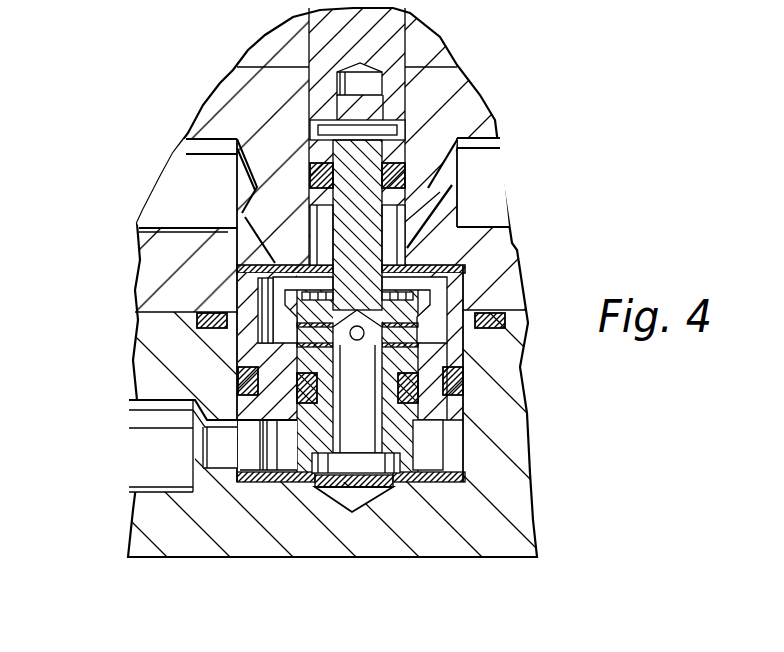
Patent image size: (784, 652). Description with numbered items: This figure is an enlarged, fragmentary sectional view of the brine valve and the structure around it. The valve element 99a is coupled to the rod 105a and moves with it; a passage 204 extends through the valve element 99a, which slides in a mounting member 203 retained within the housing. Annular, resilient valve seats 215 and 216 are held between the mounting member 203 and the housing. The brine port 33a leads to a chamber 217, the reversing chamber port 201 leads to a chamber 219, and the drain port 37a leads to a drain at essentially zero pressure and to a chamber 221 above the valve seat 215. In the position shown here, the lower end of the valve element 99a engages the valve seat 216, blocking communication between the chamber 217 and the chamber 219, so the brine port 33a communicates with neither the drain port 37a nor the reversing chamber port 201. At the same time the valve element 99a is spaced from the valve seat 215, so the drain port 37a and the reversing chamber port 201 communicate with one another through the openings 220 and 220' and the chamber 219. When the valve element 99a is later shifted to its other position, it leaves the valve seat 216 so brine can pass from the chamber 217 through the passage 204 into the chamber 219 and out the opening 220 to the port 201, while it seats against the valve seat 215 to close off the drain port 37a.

The rod 105a is at (420, 18).
The opening 220' is at (521, 149).
The reversing chamber port 201 is at (185, 190).
The drain port 37a is at (492, 198).
The valve seat 215 is at (470, 260).
The chamber 221 is at (425, 270).
The opening 220 is at (146, 246).
The chamber 219 is at (273, 320).
The mounting member 203 is at (447, 355).
The valve element 99a is at (397, 437).
The brine port 33a is at (152, 450).
The chamber 217 is at (277, 457).
The passage 204 is at (357, 437).
The valve seat 216 is at (427, 477).